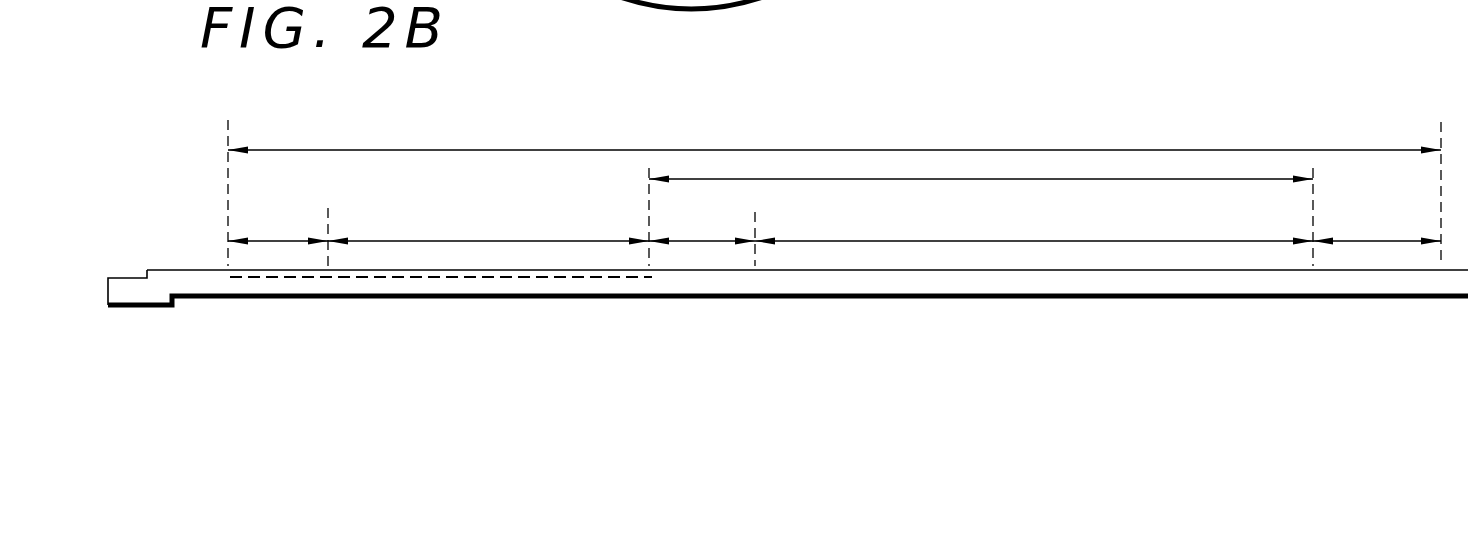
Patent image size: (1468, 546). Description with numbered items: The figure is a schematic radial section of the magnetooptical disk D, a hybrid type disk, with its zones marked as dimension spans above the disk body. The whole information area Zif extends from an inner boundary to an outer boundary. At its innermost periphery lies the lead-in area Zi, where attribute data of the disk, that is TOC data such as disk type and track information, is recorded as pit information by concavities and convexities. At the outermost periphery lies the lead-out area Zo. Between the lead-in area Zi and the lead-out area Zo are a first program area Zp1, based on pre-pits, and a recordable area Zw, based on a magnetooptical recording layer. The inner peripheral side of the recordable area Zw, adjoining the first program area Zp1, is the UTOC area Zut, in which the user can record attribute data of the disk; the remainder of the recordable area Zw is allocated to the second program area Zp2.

The magnetooptical disk D is at (983, 262).
The lead-in area Zi is at (283, 241).
The first program area Zp1 is at (420, 241).
The UTOC area Zut is at (707, 241).
The information area Zif is at (892, 150).
The recordable area Zw is at (1128, 179).
The second program area Zp2 is at (1220, 241).
The lead-out area Zo is at (1376, 241).